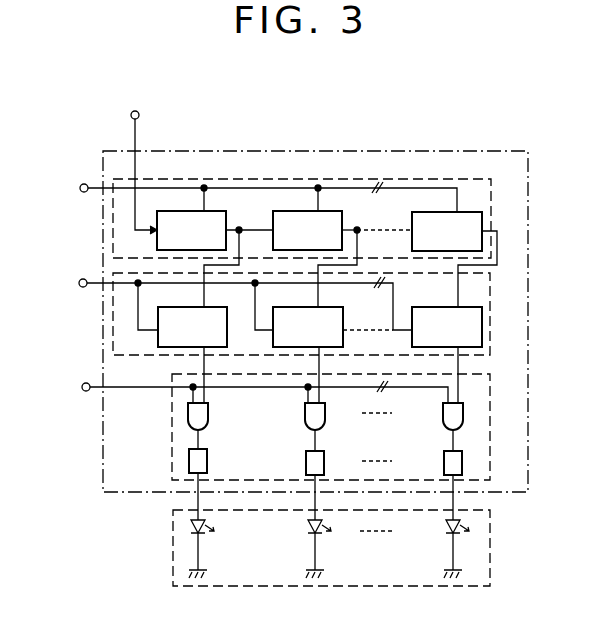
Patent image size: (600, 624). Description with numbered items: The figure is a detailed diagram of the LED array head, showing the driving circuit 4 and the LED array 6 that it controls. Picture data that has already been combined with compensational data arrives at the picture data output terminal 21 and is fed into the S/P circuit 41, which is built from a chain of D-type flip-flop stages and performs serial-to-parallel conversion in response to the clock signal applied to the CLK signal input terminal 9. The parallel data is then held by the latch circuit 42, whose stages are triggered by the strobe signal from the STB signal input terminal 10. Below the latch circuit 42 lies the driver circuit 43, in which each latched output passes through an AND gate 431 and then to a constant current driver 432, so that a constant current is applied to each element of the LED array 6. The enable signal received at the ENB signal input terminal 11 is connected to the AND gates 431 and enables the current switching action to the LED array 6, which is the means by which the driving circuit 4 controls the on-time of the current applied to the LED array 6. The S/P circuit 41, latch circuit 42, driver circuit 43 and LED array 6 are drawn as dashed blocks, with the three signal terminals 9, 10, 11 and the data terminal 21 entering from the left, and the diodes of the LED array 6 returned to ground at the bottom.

The driving circuit 4 is at (528, 403).
The S/P circuit 41 is at (474, 179).
The latch circuit 42 is at (490, 296).
The driver circuit 43 is at (368, 427).
The AND gate 431 is at (208, 411).
The constant current driver 432 is at (207, 461).
The LED array 6 is at (490, 546).
The CLK signal input terminal 9 is at (80, 188).
The STB signal input terminal 10 is at (79, 283).
The ENB signal input terminal 11 is at (82, 387).
The picture data output terminal 21 is at (139, 112).